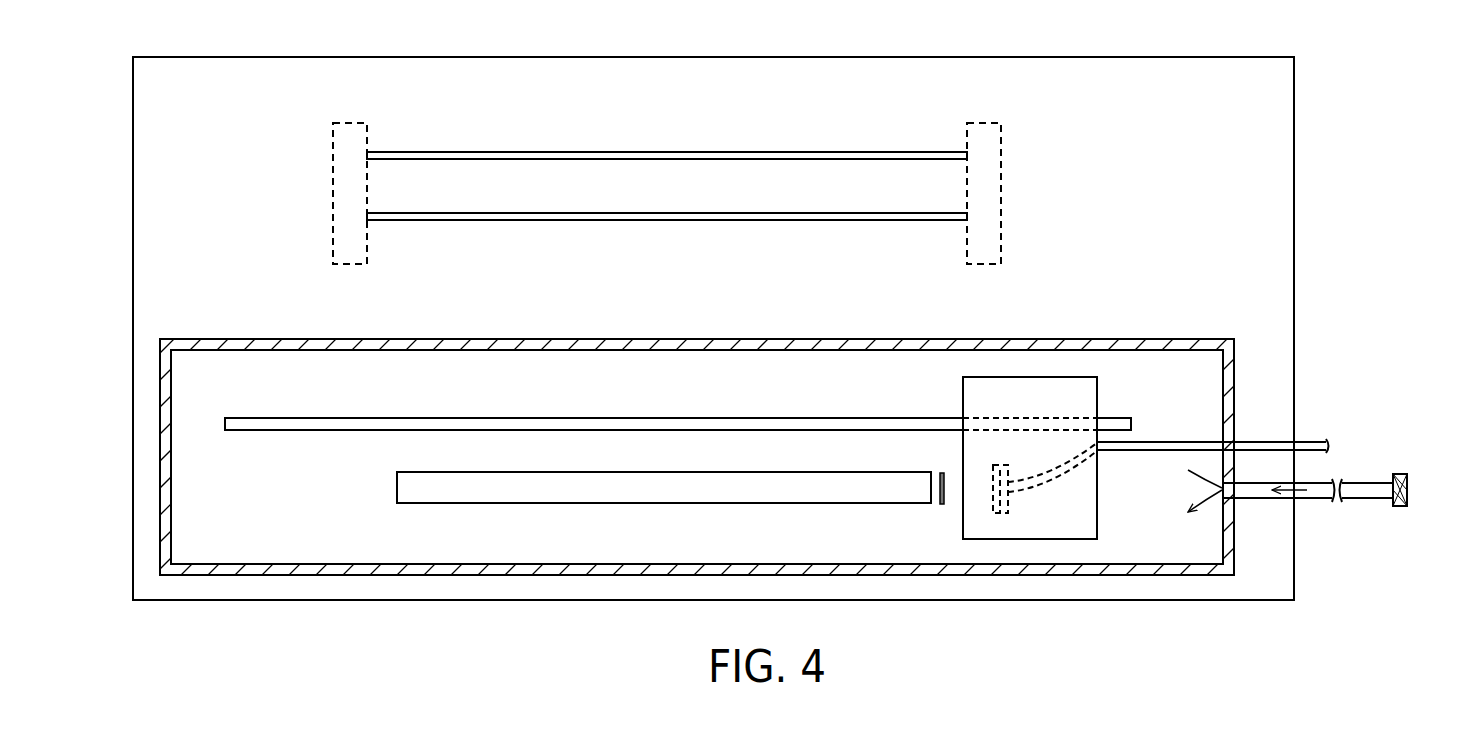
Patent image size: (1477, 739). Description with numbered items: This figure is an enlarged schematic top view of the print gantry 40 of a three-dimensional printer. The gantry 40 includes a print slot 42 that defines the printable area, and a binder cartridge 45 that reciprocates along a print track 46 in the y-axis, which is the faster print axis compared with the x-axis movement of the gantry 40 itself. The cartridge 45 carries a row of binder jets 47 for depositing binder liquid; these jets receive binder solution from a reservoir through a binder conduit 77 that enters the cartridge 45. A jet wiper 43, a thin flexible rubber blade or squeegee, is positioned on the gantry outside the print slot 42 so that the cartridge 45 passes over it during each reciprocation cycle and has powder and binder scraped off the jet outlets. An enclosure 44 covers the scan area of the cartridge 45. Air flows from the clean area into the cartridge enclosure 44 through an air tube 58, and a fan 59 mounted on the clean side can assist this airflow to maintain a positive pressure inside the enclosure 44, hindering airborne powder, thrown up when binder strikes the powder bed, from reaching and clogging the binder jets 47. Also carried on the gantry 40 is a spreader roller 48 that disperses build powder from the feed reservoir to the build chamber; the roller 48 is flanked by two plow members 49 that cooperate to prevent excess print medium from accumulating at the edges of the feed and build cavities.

The print gantry 40 is at (1294, 152).
The print slot 42 is at (645, 490).
The jet wiper 43 is at (940, 505).
The cartridge enclosure 44 is at (591, 339).
The binder cartridge 45 is at (1097, 393).
The print track 46 is at (270, 430).
The binder jets 47 is at (1010, 497).
The spreader roller 48 is at (637, 196).
The plow members 49 is at (333, 188).
The air tube 58 is at (1357, 499).
The fan 59 is at (1405, 474).
The binder conduit 77 is at (1316, 441).